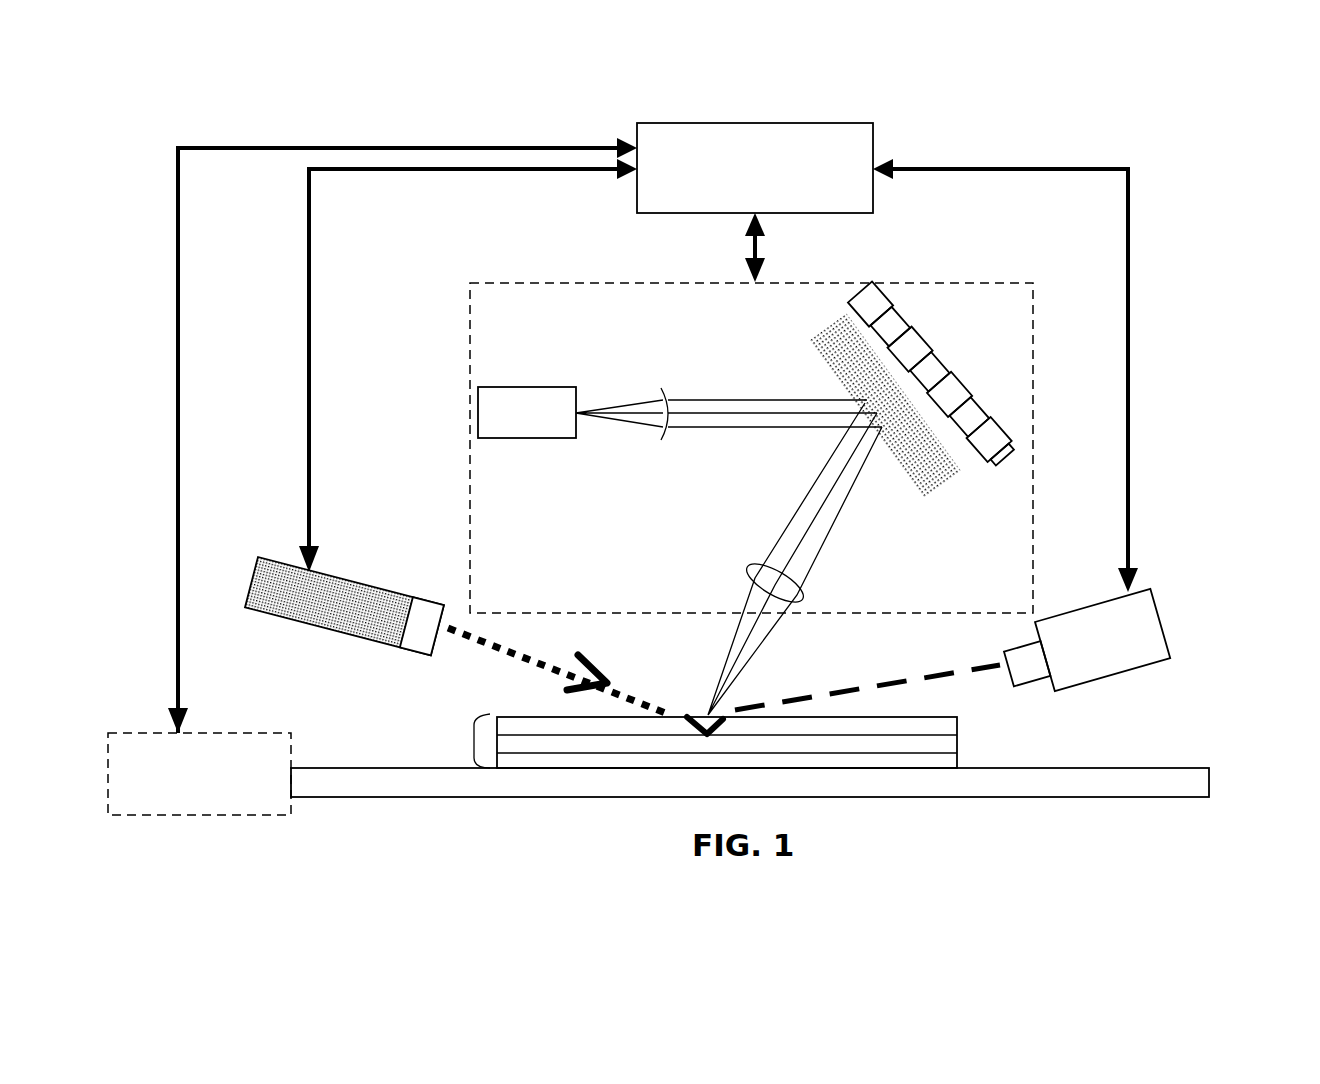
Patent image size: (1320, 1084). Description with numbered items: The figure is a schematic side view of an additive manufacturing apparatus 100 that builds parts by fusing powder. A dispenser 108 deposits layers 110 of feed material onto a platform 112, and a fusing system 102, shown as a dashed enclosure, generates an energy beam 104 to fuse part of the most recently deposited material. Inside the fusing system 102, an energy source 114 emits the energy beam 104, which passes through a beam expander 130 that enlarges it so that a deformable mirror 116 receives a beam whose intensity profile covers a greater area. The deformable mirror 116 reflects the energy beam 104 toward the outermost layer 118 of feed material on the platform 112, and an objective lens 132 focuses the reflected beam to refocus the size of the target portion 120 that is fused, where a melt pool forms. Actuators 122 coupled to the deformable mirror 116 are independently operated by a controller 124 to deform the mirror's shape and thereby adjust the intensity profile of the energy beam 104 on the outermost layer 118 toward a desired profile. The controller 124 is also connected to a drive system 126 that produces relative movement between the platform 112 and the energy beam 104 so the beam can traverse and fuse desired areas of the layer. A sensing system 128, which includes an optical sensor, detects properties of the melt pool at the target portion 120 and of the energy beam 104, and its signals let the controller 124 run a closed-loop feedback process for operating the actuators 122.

The additive manufacturing apparatus 100 is at (1248, 220).
The fusing system 102 is at (1033, 297).
The energy beam 104 is at (740, 678).
The dispenser 108 is at (356, 635).
The layers of feed material 110 is at (473, 741).
The platform 112 is at (1207, 780).
The energy source 114 is at (492, 405).
The deformable mirror 116 is at (922, 473).
The outermost layer of feed material 118 is at (957, 727).
The target portion 120 is at (725, 722).
The actuators 122 is at (930, 367).
The controller 124 is at (873, 140).
The drive system 126 is at (243, 815).
The sensing system 128 is at (1165, 625).
The beam expander 130 is at (664, 432).
The objective lens 132 is at (762, 580).